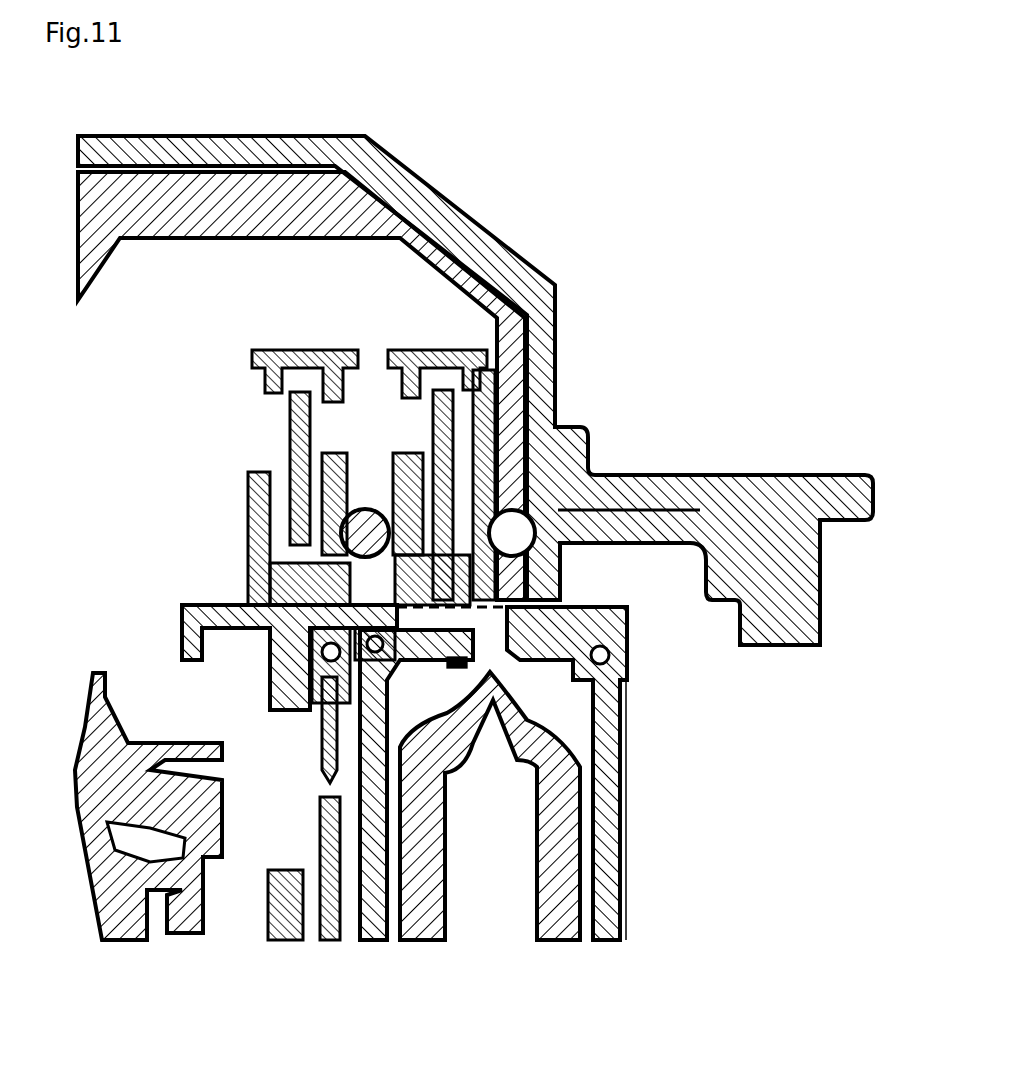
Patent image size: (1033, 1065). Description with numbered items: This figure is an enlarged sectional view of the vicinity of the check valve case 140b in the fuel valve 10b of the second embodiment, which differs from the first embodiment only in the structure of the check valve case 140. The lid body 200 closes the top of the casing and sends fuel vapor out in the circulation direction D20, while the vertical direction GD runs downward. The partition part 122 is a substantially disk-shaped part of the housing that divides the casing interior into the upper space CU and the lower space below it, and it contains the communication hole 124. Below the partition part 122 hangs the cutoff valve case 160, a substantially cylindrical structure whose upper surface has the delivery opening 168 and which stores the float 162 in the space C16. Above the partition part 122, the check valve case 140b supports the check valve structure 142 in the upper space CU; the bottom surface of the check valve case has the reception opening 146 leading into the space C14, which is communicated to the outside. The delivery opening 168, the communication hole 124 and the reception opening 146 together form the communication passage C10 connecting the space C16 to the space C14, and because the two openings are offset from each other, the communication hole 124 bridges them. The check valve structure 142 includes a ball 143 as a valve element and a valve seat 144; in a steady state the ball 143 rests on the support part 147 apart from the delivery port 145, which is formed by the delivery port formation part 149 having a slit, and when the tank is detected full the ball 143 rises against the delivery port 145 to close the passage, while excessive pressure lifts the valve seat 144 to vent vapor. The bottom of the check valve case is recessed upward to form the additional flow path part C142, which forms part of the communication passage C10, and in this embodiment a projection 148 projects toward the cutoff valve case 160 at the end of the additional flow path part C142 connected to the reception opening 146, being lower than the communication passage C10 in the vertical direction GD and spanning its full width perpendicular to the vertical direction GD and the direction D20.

The lid body 200 is at (282, 132).
The reception opening 146 is at (367, 508).
The fuel valve 10b is at (634, 188).
The upper space CU is at (168, 286).
The space C14 is at (332, 420).
The delivery port 145 is at (372, 470).
The check valve structure 142 is at (250, 390).
The check valve case 140b is at (506, 377).
The projection 148 is at (562, 391).
The additional flow path part C142 is at (541, 444).
The circulation direction D20 is at (102, 345).
The valve seat 144 is at (290, 430).
The ball 143 is at (288, 432).
The check valve case 140 is at (246, 510).
The vertical direction GD is at (38, 507).
The delivery port formation part 149 is at (248, 520).
The partition part 122 is at (212, 604).
The support part 147 is at (269, 650).
The delivery opening 168 is at (497, 630).
The communication passage C10 is at (581, 750).
The cutoff valve case 160 is at (625, 810).
The communication hole 124 is at (420, 625).
The space C16 is at (588, 885).
The float 162 is at (560, 920).